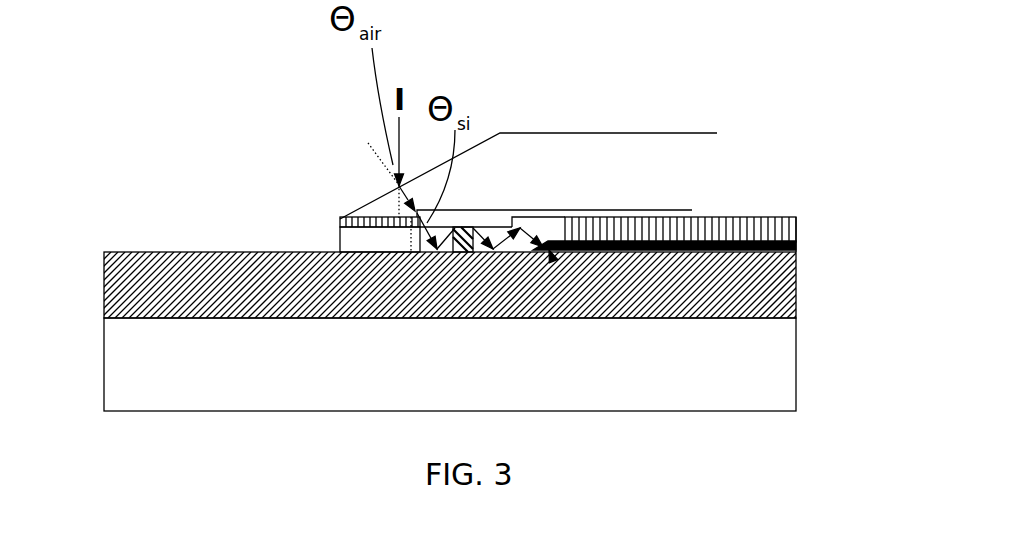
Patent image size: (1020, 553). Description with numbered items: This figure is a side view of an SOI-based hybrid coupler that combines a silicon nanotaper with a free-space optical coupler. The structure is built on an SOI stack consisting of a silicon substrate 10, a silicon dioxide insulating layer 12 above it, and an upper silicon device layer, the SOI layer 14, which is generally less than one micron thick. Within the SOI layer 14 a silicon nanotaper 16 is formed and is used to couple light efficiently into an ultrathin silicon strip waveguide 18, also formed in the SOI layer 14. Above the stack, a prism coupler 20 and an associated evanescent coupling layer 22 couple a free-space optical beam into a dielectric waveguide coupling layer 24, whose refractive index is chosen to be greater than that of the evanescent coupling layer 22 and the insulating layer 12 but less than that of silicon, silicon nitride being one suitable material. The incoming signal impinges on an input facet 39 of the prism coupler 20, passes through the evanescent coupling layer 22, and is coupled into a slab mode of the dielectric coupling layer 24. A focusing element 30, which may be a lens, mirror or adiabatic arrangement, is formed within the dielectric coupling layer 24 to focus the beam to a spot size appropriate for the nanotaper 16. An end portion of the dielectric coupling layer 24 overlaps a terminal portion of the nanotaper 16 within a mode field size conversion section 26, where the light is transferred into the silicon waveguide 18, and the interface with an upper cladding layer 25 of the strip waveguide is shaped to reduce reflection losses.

The silicon substrate 10 is at (112, 393).
The silicon dioxide insulating layer 12 is at (112, 292).
The SOI layer 14 is at (797, 243).
The silicon nanotaper 16 is at (553, 256).
The ultrathin silicon strip waveguide 18 is at (793, 217).
The prism coupler 20 is at (653, 143).
The evanescent coupling layer 22 is at (338, 220).
The dielectric waveguide coupling layer 24 is at (353, 237).
The upper cladding layer 25 is at (743, 234).
The mode field size conversion section 26 is at (533, 212).
The focusing element 30 is at (493, 223).
The input facet 39 is at (372, 203).